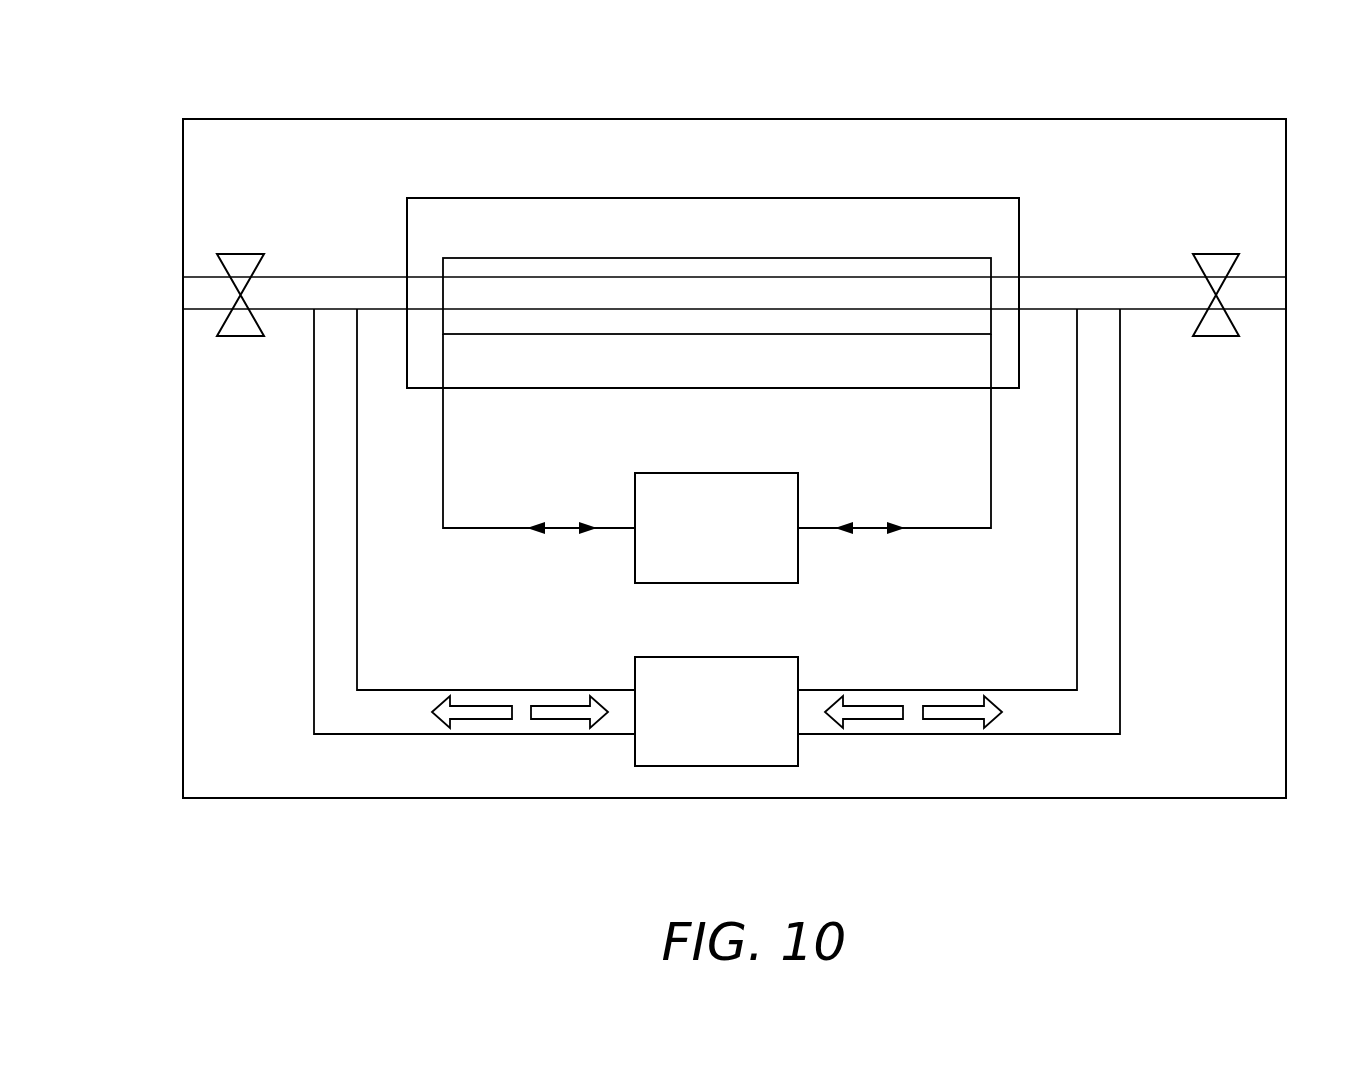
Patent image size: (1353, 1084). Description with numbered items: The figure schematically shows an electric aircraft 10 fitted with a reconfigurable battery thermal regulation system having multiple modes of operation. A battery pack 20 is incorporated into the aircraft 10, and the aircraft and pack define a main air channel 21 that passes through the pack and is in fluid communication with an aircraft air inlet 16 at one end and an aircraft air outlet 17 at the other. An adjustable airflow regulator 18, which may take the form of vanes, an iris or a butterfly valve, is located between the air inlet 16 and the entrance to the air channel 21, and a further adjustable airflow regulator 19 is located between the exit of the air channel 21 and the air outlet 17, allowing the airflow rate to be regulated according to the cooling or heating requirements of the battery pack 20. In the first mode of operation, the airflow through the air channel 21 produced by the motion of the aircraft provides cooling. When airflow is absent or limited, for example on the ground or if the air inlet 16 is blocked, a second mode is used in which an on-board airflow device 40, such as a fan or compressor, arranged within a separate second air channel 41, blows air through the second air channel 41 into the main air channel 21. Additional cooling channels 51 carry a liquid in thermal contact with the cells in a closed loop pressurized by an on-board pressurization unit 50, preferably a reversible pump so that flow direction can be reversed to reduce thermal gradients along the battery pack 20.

The aircraft 10 is at (1138, 161).
The air inlet 16 is at (1287, 295).
The air outlet 17 is at (183, 289).
The adjustable airflow regulator 18 is at (1216, 254).
The further adjustable airflow regulator 19 is at (240, 254).
The battery pack 20 is at (439, 247).
The air channel 21 is at (423, 295).
The airflow device 40 is at (702, 726).
The second air channel 41 is at (334, 537).
The pressurization unit 50 is at (702, 542).
The additional cooling channels 51 is at (683, 262).